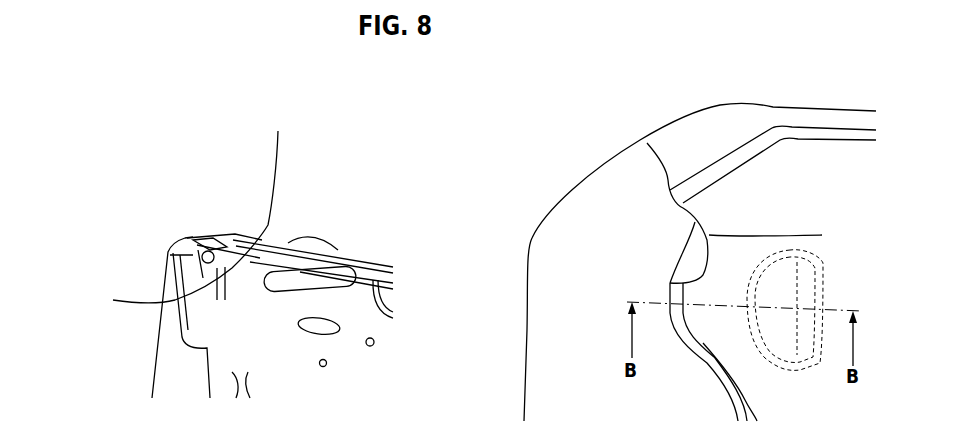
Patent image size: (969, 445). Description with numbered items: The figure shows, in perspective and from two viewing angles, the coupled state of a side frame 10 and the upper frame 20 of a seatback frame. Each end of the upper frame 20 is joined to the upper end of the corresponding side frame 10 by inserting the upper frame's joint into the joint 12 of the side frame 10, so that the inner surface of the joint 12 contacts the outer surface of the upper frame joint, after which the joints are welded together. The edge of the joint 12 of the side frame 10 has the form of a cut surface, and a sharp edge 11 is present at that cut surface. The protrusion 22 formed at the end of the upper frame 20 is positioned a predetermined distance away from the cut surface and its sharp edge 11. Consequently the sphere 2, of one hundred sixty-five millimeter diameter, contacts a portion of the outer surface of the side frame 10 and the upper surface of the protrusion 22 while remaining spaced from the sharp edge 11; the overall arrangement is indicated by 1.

The vehicle 1 is at (322, 205).
The sphere 2 is at (279, 173).
The side frame 10 is at (146, 352).
The sharp edge 11 is at (193, 237).
The joint 12 is at (192, 275).
The upper frame 20 is at (356, 252).
The protrusion 22 is at (198, 238).